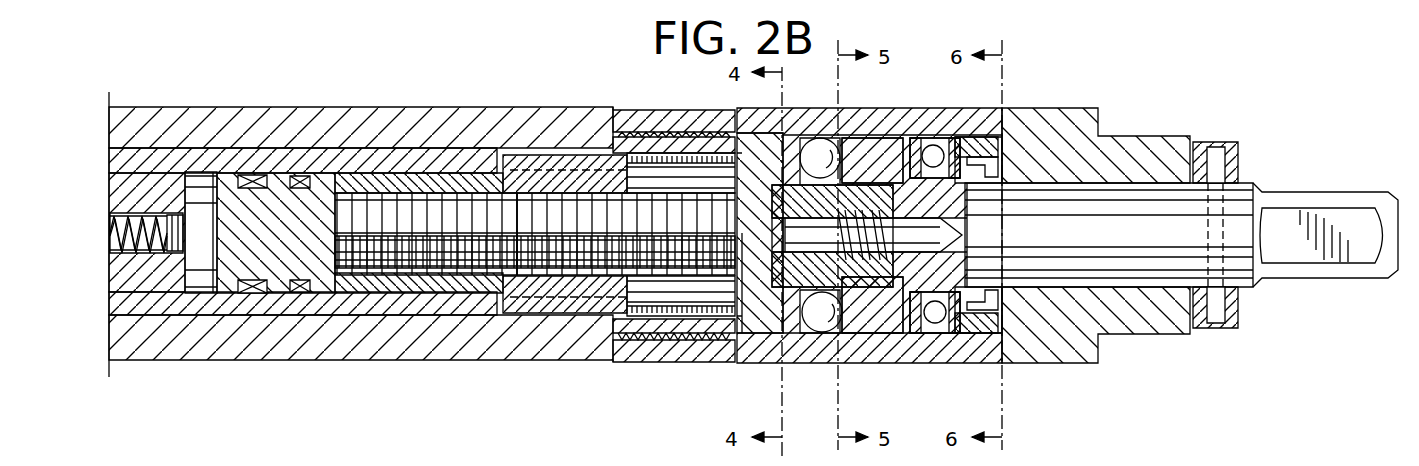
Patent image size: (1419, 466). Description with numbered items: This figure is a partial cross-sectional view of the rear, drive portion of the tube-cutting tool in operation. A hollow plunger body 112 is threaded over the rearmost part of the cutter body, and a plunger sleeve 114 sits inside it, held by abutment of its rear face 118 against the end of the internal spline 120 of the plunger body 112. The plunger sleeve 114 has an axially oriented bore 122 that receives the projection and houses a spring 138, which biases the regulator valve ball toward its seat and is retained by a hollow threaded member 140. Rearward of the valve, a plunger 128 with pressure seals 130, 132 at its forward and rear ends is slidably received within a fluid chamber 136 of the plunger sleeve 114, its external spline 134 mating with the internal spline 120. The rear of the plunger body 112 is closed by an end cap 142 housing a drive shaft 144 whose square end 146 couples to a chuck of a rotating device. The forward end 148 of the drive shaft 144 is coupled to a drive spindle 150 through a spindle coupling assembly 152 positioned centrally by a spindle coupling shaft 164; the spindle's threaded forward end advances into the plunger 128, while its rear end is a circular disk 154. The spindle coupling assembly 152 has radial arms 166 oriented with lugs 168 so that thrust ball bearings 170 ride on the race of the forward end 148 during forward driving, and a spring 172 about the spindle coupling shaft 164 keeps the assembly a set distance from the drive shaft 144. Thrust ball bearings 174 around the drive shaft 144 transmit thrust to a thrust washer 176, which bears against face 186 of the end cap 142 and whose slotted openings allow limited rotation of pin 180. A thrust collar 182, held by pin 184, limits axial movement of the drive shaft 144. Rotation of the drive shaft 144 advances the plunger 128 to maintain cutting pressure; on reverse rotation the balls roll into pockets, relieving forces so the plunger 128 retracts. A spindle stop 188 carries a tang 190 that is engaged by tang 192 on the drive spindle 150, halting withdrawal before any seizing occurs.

The hollow plunger body 112 is at (303, 347).
The plunger sleeve 114 is at (142, 298).
The rear face 118 is at (512, 302).
The internal spline 120 is at (636, 158).
The axially oriented bore 122 is at (110, 243).
The plunger 128 is at (422, 280).
The pressure seal 130 is at (255, 173).
The pressure seal 132 is at (300, 174).
The external spline 134 is at (580, 303).
The fluid chamber 136 is at (202, 288).
The spring 138 is at (110, 225).
The hollow threaded member 140 is at (120, 265).
The end cap 142 is at (1083, 353).
The drive shaft 144 is at (1109, 235).
The square end 146 is at (1350, 270).
The forward end 148 is at (857, 137).
The drive spindle 150 is at (733, 358).
The spindle coupling assembly 152 is at (777, 170).
The circular disk 154 is at (772, 316).
The spindle coupling shaft 164 is at (963, 228).
The radial arms 166 is at (818, 280).
The lugs 168 is at (873, 280).
The thrust ball bearings 170 is at (823, 143).
The spring 172 is at (900, 177).
The thrust ball bearings 174 is at (937, 322).
The thrust washer 176 is at (998, 157).
The pin 180 is at (1003, 318).
The thrust collar 182 is at (1237, 305).
The pin 184 is at (1227, 160).
The face 186 is at (1010, 130).
The spindle stop 188 is at (374, 213).
The tang 190 is at (393, 273).
The tang 192 is at (512, 207).